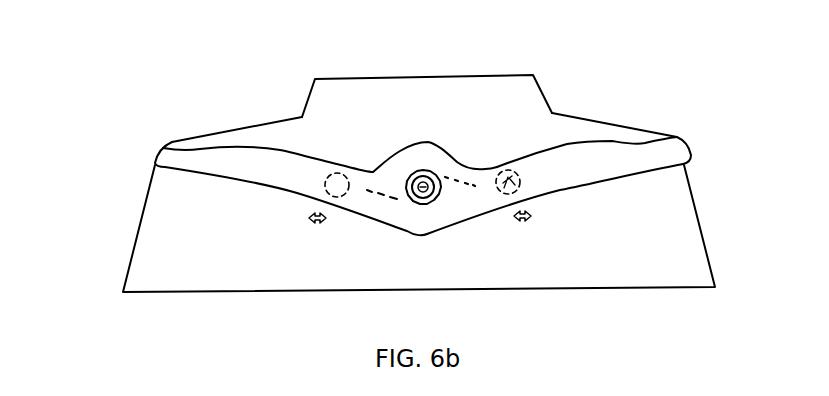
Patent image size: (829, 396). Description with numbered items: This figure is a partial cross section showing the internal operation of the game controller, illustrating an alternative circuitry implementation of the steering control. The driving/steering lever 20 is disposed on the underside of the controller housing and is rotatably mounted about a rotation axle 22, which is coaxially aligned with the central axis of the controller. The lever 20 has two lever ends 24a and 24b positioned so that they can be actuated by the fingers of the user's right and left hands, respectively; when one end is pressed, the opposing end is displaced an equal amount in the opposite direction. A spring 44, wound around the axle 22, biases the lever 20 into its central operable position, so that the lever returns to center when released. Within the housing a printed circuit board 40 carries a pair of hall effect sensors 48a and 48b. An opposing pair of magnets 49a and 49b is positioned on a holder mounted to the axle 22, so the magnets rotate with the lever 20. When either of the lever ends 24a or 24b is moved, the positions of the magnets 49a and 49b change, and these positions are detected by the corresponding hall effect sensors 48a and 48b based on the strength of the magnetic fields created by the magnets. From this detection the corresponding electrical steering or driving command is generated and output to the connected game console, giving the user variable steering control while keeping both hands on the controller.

The driving/steering lever 20 is at (423, 143).
The rotation axle 22 is at (437, 193).
The lever end 24a is at (257, 163).
The lever end 24b is at (625, 153).
The printed circuit board 40 is at (168, 238).
The spring 44 is at (393, 197).
The hall effect sensor 48a is at (307, 220).
The hall effect sensor 48b is at (533, 218).
The magnet 49a is at (330, 170).
The magnet 49b is at (525, 170).